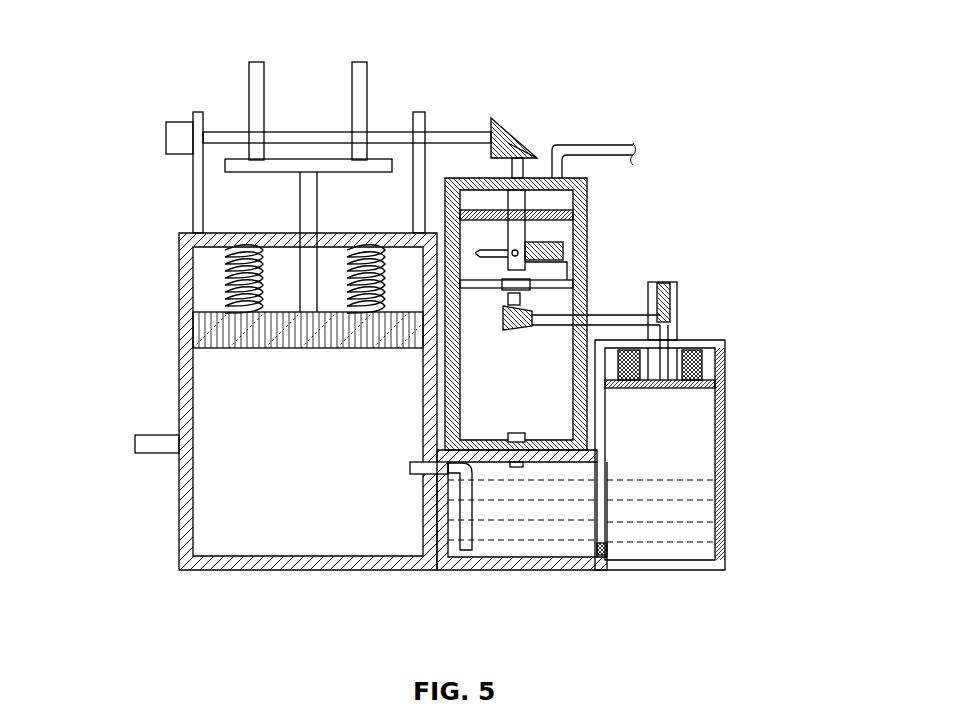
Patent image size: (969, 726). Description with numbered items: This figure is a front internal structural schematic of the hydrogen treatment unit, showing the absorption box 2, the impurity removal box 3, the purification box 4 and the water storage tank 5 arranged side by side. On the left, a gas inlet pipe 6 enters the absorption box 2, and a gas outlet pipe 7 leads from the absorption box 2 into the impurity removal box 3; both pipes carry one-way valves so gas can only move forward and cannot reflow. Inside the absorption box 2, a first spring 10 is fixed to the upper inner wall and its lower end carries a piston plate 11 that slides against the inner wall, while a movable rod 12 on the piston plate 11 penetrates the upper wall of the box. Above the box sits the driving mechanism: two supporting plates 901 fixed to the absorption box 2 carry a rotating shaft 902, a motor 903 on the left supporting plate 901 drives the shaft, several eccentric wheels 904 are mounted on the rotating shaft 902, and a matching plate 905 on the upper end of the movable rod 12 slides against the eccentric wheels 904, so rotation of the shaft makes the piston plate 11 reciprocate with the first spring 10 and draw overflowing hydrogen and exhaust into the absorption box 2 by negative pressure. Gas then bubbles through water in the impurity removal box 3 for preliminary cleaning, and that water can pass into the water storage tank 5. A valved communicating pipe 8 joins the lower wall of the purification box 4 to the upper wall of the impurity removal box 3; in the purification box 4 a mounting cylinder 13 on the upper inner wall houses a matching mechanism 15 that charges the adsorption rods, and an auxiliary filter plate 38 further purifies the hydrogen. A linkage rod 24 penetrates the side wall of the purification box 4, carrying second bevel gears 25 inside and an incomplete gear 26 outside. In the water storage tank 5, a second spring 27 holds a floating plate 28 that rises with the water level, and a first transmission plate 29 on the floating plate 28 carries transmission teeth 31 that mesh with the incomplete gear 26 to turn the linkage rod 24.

The absorption box 2 is at (178, 292).
The impurity removal box 3 is at (515, 570).
The purification box 4 is at (583, 242).
The water storage tank 5 is at (727, 543).
The gas inlet pipe 6 is at (162, 446).
The gas outlet pipe 7 is at (464, 514).
The communicating pipe 8 is at (516, 465).
The first spring 10 is at (230, 288).
The piston plate 11 is at (382, 349).
The movable rod 12 is at (308, 296).
The mounting cylinder 13 is at (521, 198).
The matching mechanism 15 is at (515, 143).
The linkage rod 24 is at (607, 314).
The second bevel gears 25 is at (522, 322).
The incomplete gear 26 is at (669, 308).
The second spring 27 is at (705, 366).
The floating plate 28 is at (690, 389).
The first transmission plate 29 is at (672, 357).
The transmission teeth 31 is at (667, 281).
The auxiliary filter plate 38 is at (561, 211).
The supporting plates 901 is at (193, 207).
The rotating shaft 902 is at (438, 133).
The motor 903 is at (184, 134).
The eccentric wheels 904 is at (357, 93).
The matching plate 905 is at (339, 167).